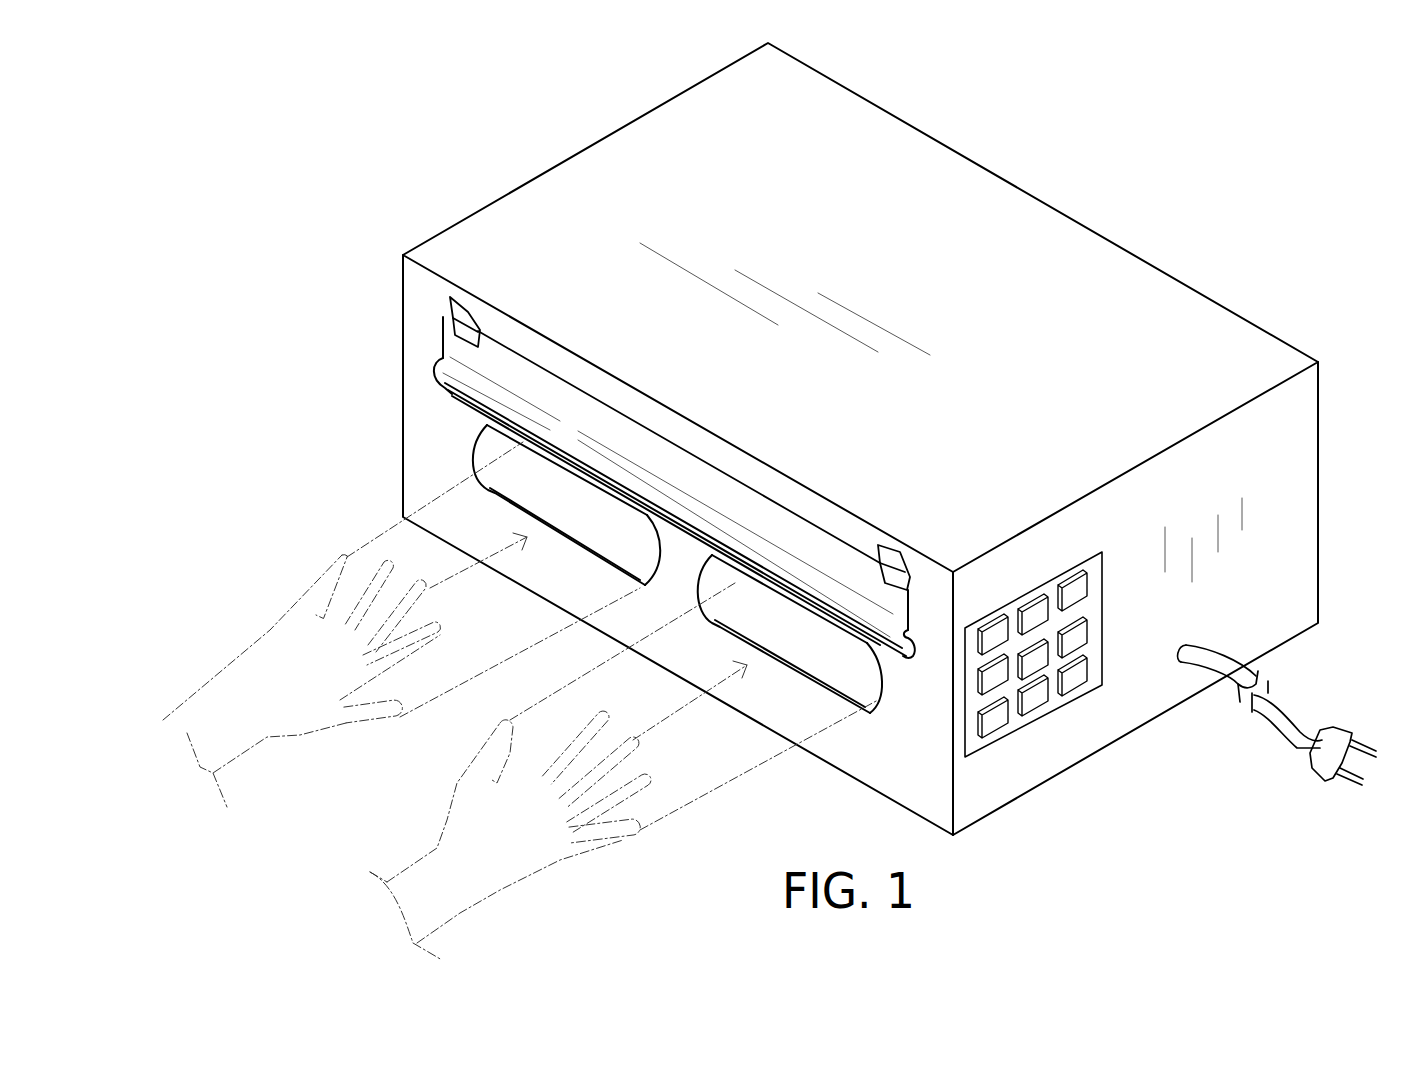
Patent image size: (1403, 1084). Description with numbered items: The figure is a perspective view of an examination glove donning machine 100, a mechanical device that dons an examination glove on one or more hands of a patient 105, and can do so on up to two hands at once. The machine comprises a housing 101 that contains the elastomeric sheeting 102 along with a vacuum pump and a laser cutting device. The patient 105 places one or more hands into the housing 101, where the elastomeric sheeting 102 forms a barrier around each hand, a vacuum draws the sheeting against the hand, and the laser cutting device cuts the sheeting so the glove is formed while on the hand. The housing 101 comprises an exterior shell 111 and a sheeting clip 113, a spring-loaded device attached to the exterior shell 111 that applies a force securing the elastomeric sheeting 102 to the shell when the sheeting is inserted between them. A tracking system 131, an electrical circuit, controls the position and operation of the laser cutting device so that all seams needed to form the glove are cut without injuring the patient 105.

The examination glove donning machine 100 is at (302, 223).
The housing 101 is at (1192, 270).
The elastomeric sheeting 102 is at (460, 357).
The patient 105 is at (108, 825).
The exterior shell 111 is at (1258, 555).
The sheeting clip 113 is at (470, 312).
The tracking system 131 is at (1020, 712).